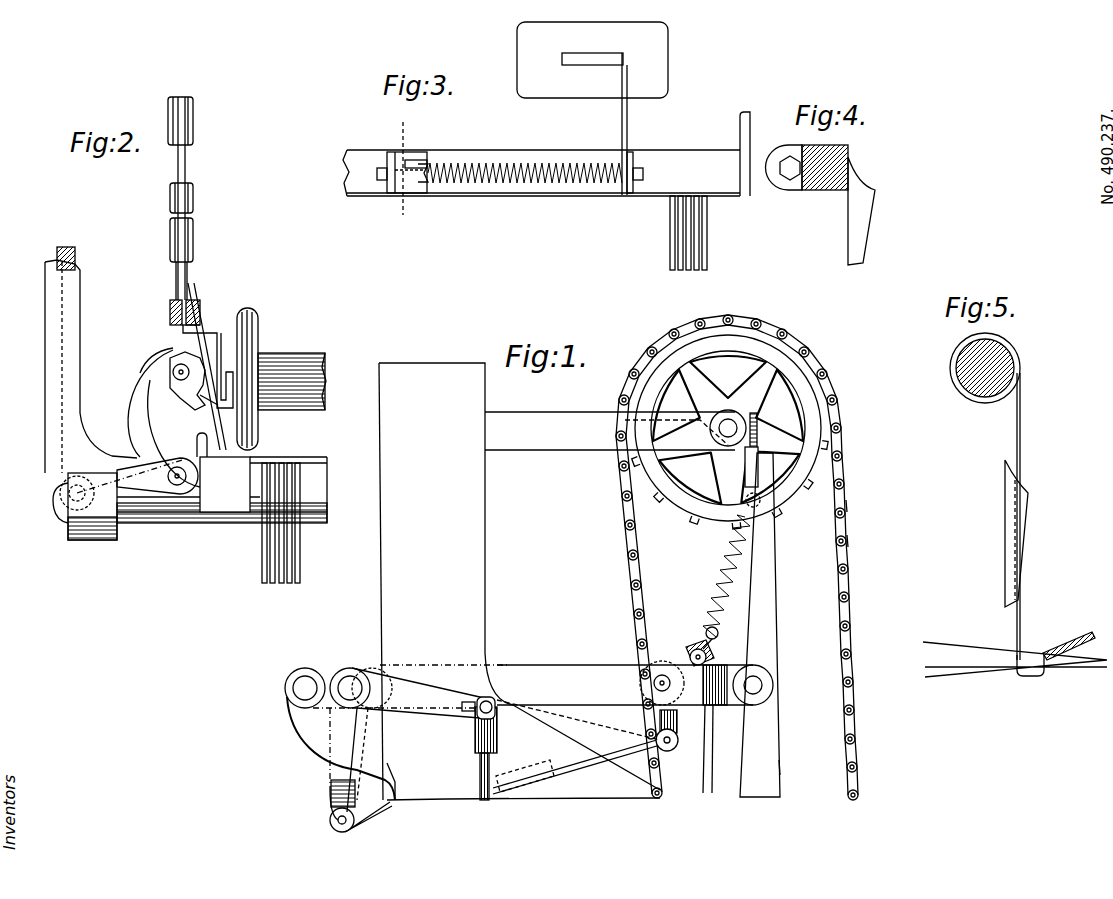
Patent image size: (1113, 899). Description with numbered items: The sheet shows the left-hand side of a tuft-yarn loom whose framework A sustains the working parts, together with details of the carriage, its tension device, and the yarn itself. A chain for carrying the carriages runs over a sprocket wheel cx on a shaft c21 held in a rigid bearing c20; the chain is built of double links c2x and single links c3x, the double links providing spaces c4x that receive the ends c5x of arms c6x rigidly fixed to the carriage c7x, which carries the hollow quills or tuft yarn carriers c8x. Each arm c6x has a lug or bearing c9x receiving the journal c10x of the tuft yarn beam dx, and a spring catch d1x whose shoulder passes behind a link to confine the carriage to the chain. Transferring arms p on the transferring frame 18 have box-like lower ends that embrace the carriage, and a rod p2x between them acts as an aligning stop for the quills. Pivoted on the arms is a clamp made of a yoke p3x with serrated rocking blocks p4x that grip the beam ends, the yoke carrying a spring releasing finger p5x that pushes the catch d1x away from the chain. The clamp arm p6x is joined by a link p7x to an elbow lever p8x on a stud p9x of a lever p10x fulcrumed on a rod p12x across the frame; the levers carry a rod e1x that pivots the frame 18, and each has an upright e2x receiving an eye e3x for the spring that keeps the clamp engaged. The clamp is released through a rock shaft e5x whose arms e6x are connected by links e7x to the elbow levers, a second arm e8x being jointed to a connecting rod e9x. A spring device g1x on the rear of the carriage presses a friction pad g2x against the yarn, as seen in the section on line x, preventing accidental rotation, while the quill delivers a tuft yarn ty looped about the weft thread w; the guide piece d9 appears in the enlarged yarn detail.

In FIG. 1, the framework A is at (519, 581).
In FIG. 1, the transferring frame 18 is at (780, 768).
In FIG. 1, the rigid bearing c20 is at (610, 431).
In FIG. 1, the shaft c21 is at (728, 418).
In FIG. 1, the sprocket wheel cx is at (636, 521).
In FIG. 2, the double link c2x is at (194, 202).
In FIG. 1, the double link c2x is at (848, 541).
In FIG. 2, the single link c3x is at (188, 167).
In FIG. 1, the single link c3x is at (847, 506).
In FIG. 2, the space c4x is at (194, 238).
In FIG. 1, the space c4x is at (720, 576).
In FIG. 2, the arm end c5x is at (178, 321).
In FIG. 2, the arm c6x is at (215, 426).
In FIG. 2, the carriage c7x is at (322, 472).
In FIG. 4, the carriage c7x is at (818, 192).
In FIG. 2, the quill or tuft yarn carrier c8x is at (297, 565).
In FIG. 3, the quill or tuft yarn carrier c8x is at (707, 242).
In FIG. 4, the quill or tuft yarn carrier c8x is at (873, 211).
In FIG. 5, the quill or tuft yarn carrier c8x is at (1010, 503).
In FIG. 2, the lug or bearing c9x is at (227, 372).
In FIG. 2, the journal c10x is at (200, 396).
In FIG. 2, the tuft yarn beam dx is at (302, 358).
In FIG. 5, the tuft yarn beam dx is at (956, 372).
In FIG. 2, the spring catch d1x is at (198, 318).
In FIG. 5, the guide piece d9 is at (1069, 637).
In FIG. 1, the rod e1x is at (773, 686).
In FIG. 1, the upright or stand e2x is at (778, 618).
In FIG. 1, the slide bar e3x is at (758, 437).
In FIG. 1, the rock shaft e5x is at (351, 682).
In FIG. 1, the arm e6x is at (330, 781).
In FIG. 1, the link e7x is at (585, 747).
In FIG. 1, the arm e8x is at (471, 694).
In FIG. 1, the connecting rod e9x is at (493, 803).
In FIG. 3, the spring device g1x is at (578, 162).
In FIG. 3, the friction pad g2x is at (617, 108).
In FIG. 2, the transferring arm p is at (45, 352).
In FIG. 2, the rod p2x is at (180, 526).
In FIG. 2, the yoke p3x is at (140, 400).
In FIG. 2, the rocking block p4x is at (180, 360).
In FIG. 2, the spring releasing finger p5x is at (160, 356).
In FIG. 2, the arm p6x is at (137, 522).
In FIG. 2, the link p7x is at (68, 249).
In FIG. 1, the link p7x is at (703, 771).
In FIG. 1, the elbow lever p8x is at (694, 650).
In FIG. 1, the stud p9x is at (652, 674).
In FIG. 1, the lever p10x is at (558, 665).
In FIG. 1, the rod p12x is at (305, 684).
In FIG. 5, the tuft yarn ty is at (1015, 441).
In FIG. 5, the weft thread w is at (1030, 660).
In FIG. 3, the section line x is at (399, 170).